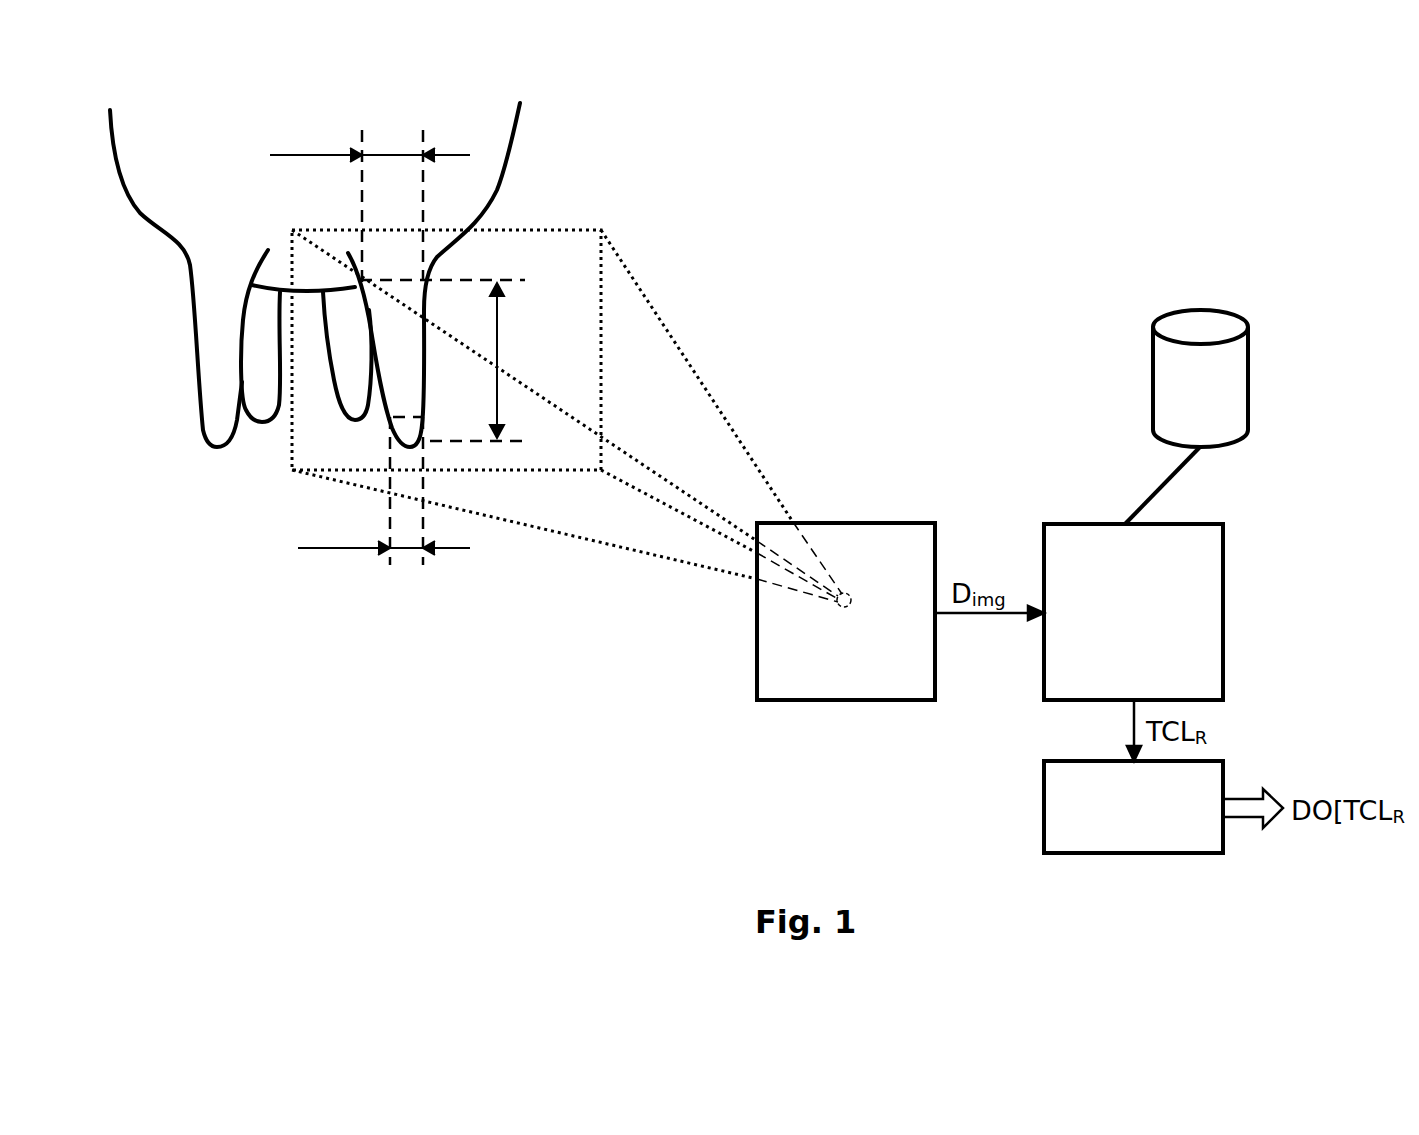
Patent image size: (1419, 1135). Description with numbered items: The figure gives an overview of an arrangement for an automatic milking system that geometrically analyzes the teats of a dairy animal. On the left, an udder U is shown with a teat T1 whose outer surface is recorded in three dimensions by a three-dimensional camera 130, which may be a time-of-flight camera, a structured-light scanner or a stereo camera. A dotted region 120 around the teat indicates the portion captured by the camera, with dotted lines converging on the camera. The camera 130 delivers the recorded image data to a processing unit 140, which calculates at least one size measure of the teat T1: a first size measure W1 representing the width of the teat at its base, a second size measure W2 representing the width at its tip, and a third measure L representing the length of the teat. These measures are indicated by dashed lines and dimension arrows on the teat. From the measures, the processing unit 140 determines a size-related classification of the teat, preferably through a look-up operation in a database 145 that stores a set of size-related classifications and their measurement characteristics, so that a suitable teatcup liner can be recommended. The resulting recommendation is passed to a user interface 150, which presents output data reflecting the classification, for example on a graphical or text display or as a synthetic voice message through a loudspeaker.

The udder U is at (222, 177).
The teat T1 is at (390, 355).
The first size measure W1 is at (370, 202).
The second size measure W2 is at (384, 491).
The third size measure L is at (443, 360).
The capture region / field of view 120 is at (510, 228).
The three-dimensional camera 130 is at (755, 648).
The processing unit 140 is at (1087, 523).
The database 145 is at (1250, 383).
The user interface 150 is at (1044, 808).